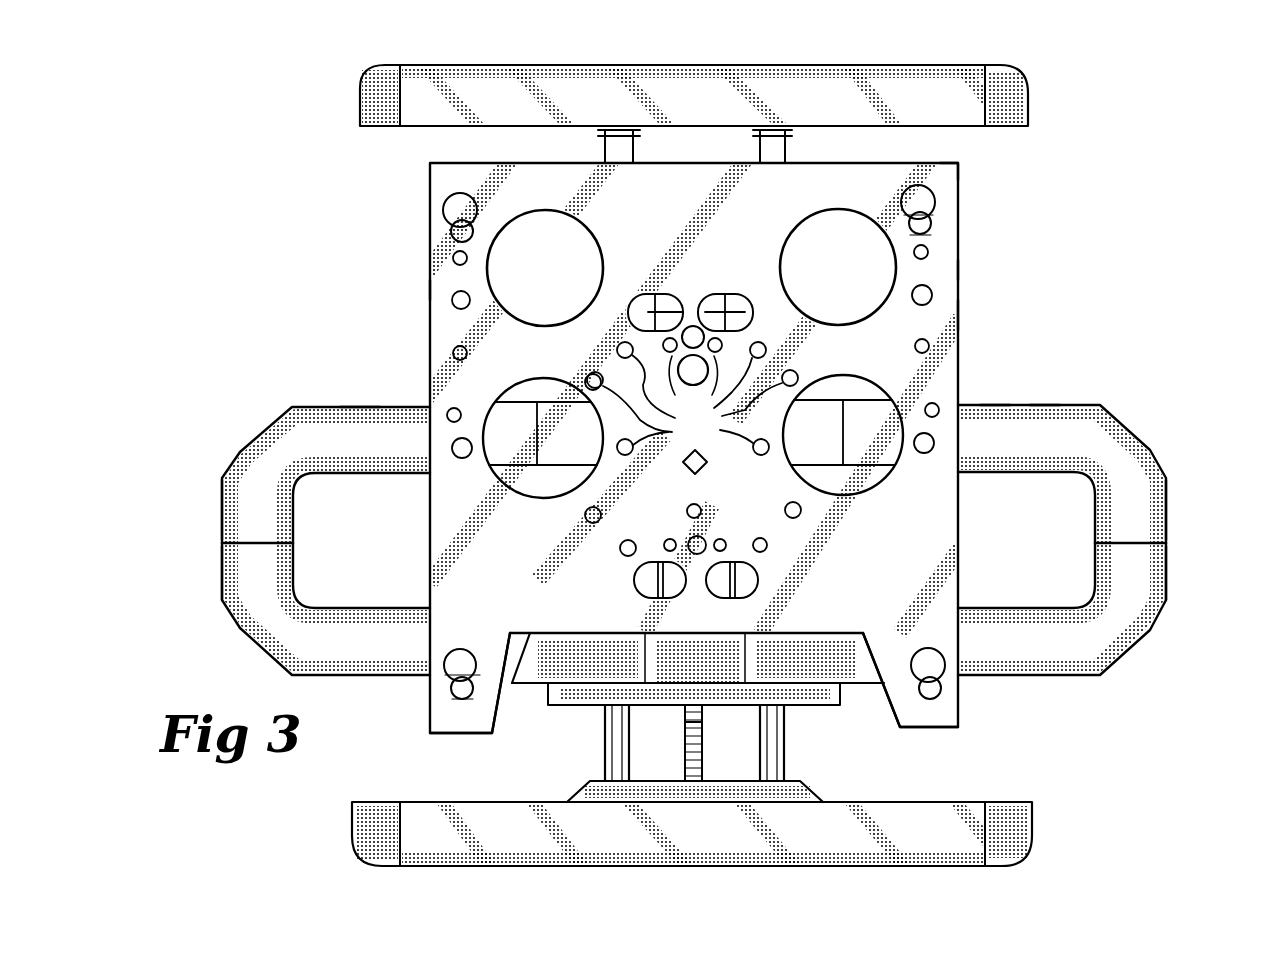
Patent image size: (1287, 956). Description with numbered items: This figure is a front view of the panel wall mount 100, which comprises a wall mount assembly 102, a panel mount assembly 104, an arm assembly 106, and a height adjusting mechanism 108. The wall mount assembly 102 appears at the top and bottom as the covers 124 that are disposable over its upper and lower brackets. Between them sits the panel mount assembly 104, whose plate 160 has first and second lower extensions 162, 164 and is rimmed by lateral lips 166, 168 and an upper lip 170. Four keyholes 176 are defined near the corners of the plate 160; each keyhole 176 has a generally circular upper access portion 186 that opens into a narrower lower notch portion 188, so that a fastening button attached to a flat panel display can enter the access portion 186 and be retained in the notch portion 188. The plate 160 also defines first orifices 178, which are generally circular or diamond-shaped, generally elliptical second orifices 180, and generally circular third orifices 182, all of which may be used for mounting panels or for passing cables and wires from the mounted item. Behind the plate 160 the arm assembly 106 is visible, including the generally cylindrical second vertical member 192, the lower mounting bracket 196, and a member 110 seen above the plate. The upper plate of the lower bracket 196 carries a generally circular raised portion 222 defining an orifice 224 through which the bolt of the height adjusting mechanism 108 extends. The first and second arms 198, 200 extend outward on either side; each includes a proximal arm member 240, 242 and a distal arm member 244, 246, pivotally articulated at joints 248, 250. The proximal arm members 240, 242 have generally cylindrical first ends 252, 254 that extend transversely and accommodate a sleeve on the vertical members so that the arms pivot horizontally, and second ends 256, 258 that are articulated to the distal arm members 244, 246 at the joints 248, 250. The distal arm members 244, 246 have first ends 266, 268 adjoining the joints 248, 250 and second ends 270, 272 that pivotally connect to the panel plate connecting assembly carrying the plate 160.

The panel wall mount 100 is at (1140, 305).
The wall mount assembly 102 is at (940, 56).
The panel mount assembly 104 is at (970, 318).
The arm assembly 106 is at (1048, 396).
The height adjusting mechanism 108 is at (712, 756).
The upper support post 110 is at (604, 148).
The covers 124 is at (708, 86).
The plate 160 is at (505, 582).
The first lower extension 162 is at (490, 725).
The second lower extension 164 is at (910, 727).
The lateral lip 166 is at (430, 291).
The lateral lip 168 is at (962, 272).
The upper lip 170 is at (958, 163).
The keyholes 176 is at (934, 215).
The first orifices 178 is at (692, 400).
The second orifices 180 is at (720, 296).
The third orifices 182 is at (556, 326).
The upper access portions 186 is at (935, 200).
The lower notch portions 188 is at (931, 232).
The second vertical member 192 is at (758, 148).
The second lower mounting bracket 196 is at (800, 800).
The first arm 198 is at (372, 406).
The second arm 200 is at (990, 405).
The raised portion 222 is at (684, 778).
The orifice 224 is at (706, 712).
The first proximal arm member 240 is at (398, 610).
The second proximal arm member 242 is at (1010, 608).
The first distal arm member 244 is at (420, 407).
The second distal arm member 246 is at (1085, 405).
The joint 248 is at (222, 548).
The joint 250 is at (1168, 546).
The first end of proximal arm member 252 is at (600, 705).
The first end of proximal arm member 254 is at (800, 705).
The second end of proximal arm member 256 is at (242, 558).
The second end of proximal arm member 258 is at (1168, 565).
The first end of distal arm member 266 is at (253, 530).
The first end of distal arm member 268 is at (1130, 528).
The second end of distal arm member 270 is at (525, 466).
The second end of distal arm member 272 is at (858, 466).